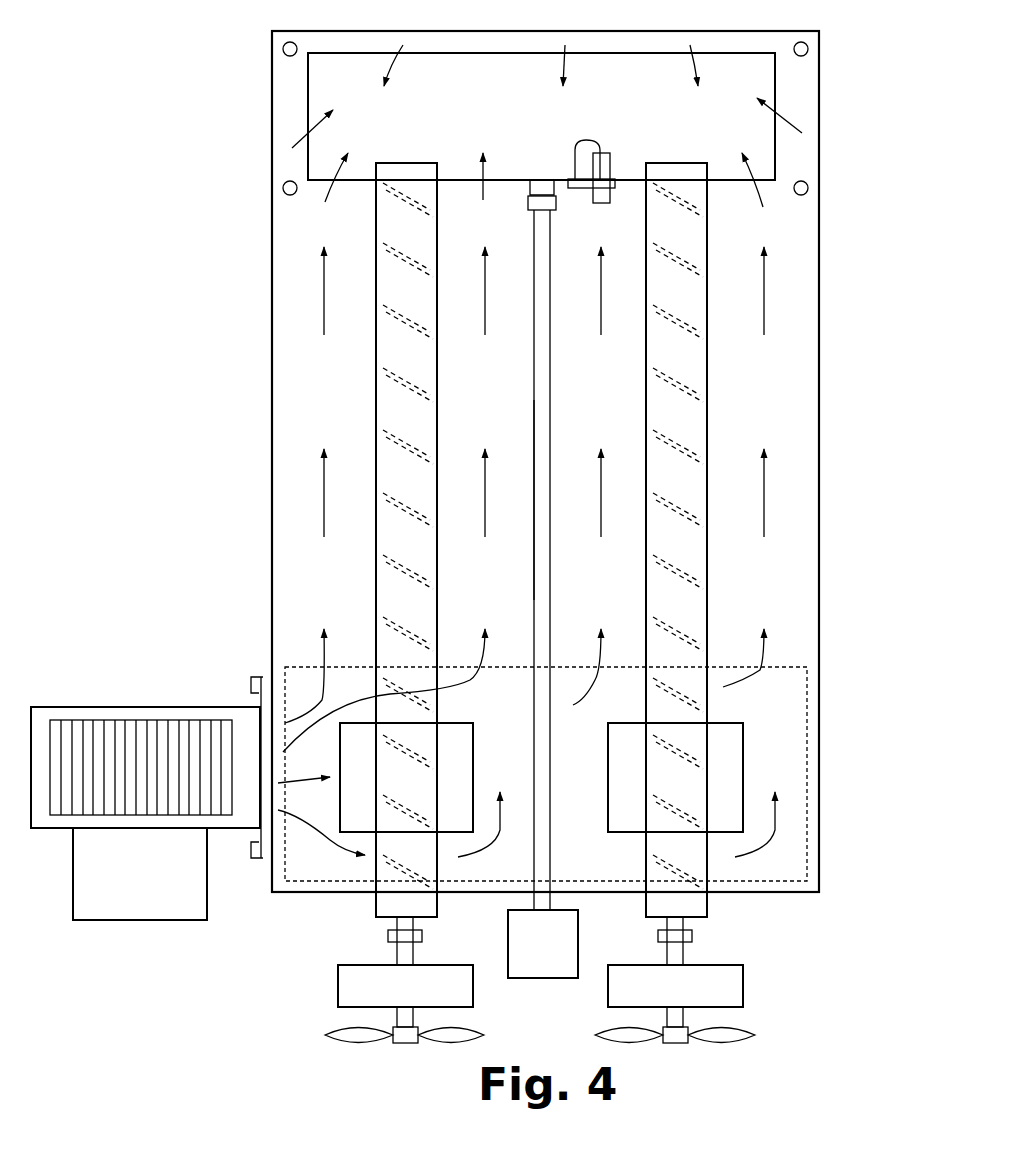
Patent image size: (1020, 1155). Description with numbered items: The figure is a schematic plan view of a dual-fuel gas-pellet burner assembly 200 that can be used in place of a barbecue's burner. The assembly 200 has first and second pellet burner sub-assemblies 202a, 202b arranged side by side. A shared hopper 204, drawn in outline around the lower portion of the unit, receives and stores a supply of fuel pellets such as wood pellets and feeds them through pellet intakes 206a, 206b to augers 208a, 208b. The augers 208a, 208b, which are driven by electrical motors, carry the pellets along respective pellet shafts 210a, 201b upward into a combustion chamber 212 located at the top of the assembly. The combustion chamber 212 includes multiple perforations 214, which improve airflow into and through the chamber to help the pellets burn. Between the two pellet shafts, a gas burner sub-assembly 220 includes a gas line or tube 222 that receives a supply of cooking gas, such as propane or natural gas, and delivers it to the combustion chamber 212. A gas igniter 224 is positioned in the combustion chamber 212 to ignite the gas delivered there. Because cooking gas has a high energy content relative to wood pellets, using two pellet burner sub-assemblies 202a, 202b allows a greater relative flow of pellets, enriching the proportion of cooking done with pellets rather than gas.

The dual-fuel gas-pellet burner assembly 200 is at (146, 102).
The pellet shaft 201b is at (646, 576).
The first pellet burner sub-assembly 202a is at (357, 556).
The second pellet burner sub-assembly 202b is at (727, 558).
The shared hopper 204 is at (808, 783).
The pellet intake 206a is at (475, 749).
The pellet intake 206b is at (743, 750).
The auger 208a is at (402, 441).
The auger 208b is at (672, 381).
The pellet shaft 210a is at (376, 411).
The combustion chamber 212 is at (561, 125).
The perforations 214 is at (324, 290).
The gas burner sub-assembly 220 is at (532, 532).
The gas line or tube 222 is at (534, 368).
The gas igniter 224 is at (601, 158).